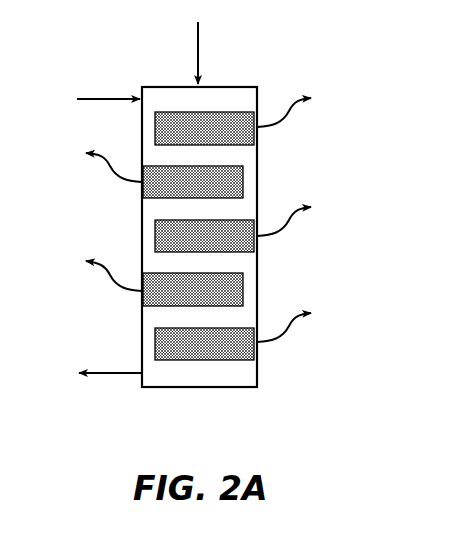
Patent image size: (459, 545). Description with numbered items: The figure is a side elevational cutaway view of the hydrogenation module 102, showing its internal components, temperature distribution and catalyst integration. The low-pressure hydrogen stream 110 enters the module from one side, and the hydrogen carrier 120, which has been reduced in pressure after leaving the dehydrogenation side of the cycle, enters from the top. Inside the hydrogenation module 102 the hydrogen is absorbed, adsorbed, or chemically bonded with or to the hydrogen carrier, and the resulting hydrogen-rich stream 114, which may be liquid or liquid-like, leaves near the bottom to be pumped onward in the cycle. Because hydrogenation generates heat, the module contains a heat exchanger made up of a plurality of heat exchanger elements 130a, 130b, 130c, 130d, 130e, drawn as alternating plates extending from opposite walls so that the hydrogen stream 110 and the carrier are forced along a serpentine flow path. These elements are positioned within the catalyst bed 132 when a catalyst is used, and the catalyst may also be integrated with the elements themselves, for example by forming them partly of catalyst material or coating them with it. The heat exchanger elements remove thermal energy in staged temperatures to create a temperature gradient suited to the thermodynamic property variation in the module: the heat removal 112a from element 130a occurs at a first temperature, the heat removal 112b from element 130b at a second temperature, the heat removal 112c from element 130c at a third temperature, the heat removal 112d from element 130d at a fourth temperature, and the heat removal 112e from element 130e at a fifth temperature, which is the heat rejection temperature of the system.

The hydrogenation module 102 is at (270, 32).
The low-pressure hydrogen stream 110 is at (97, 97).
The heat removal 112a is at (281, 123).
The heat removal 112b is at (118, 178).
The heat removal 112c is at (281, 232).
The heat removal 112d is at (118, 287).
The heat removal 112e is at (281, 338).
The hydrogen-rich stream 114 is at (112, 375).
The hydrogen carrier 120 is at (201, 39).
The heat exchanger element 130a is at (162, 126).
The heat exchanger element 130b is at (236, 178).
The heat exchanger element 130c is at (162, 235).
The heat exchanger element 130d is at (236, 288).
The heat exchanger element 130e is at (162, 342).
The catalyst bed 132 is at (236, 389).